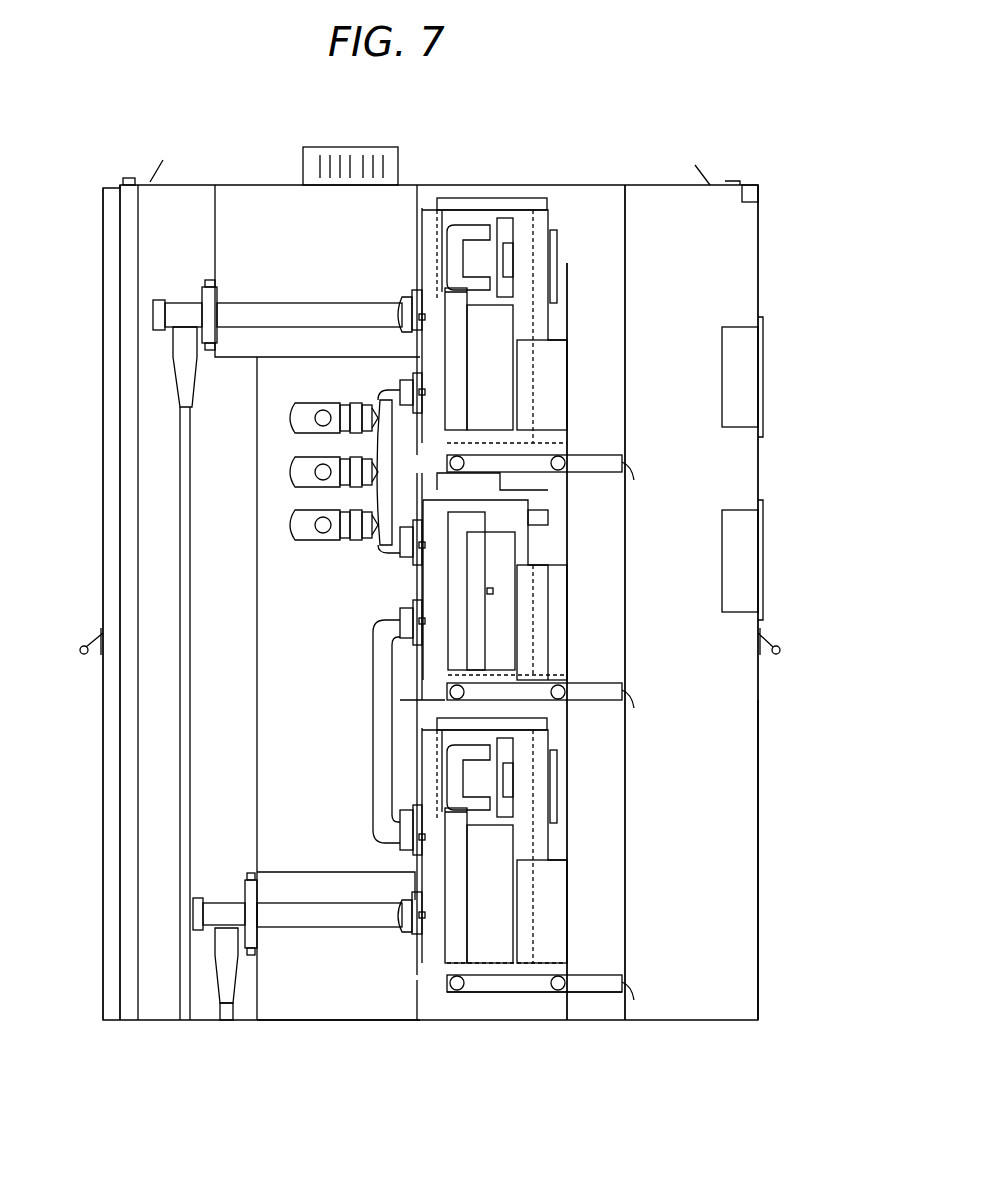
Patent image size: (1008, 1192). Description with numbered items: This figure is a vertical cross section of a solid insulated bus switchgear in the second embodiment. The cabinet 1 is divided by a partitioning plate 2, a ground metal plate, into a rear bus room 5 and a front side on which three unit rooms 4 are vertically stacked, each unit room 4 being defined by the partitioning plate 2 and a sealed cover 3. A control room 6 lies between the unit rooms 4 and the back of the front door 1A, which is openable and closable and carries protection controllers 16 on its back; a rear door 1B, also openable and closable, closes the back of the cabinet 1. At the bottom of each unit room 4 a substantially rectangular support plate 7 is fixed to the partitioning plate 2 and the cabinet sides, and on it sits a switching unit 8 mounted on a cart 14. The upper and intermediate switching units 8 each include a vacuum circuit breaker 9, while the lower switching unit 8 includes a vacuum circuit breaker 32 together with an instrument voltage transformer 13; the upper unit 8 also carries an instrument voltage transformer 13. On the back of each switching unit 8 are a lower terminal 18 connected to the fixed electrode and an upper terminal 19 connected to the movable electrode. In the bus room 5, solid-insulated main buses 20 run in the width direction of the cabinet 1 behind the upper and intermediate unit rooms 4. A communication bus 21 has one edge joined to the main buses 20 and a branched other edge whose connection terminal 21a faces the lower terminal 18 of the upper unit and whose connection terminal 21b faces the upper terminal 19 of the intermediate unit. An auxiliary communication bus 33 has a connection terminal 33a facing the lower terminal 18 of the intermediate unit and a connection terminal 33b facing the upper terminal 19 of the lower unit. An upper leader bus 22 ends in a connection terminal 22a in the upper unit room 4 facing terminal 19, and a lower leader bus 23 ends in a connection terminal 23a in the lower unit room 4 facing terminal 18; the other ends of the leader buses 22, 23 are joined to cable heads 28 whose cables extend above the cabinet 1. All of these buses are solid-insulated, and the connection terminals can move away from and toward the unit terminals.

The cabinet 1 is at (752, 183).
The front door 1A is at (760, 470).
The rear door 1B is at (110, 433).
The partitioning plate 2 is at (412, 1005).
The sealed cover 3 is at (627, 437).
The unit room 4 is at (608, 395).
The bus room 5 is at (282, 1030).
The control room 6 is at (760, 925).
The support plate 7 is at (620, 462).
The switching unit 8 is at (583, 210).
The vacuum circuit breaker 9 is at (538, 330).
The instrument voltage transformer 13 is at (470, 228).
The cart 14 is at (500, 975).
The protection controller 16 is at (763, 385).
The terminal 18 is at (467, 390).
The terminal 19 is at (467, 320).
The main bus 20 is at (307, 530).
The communication bus 21 is at (378, 540).
The connection terminal 21a is at (400, 390).
The connection terminal 21b is at (405, 560).
The upper leader bus 22 is at (268, 305).
The connection terminal 22a is at (407, 320).
The lower leader bus 23 is at (305, 905).
The connection terminal 23a is at (403, 912).
The cable head 28 is at (190, 310).
The vacuum circuit breaker 32 is at (535, 840).
The auxiliary communication bus 33 is at (373, 770).
The connection terminal 33a is at (400, 620).
The connection terminal 33b is at (405, 845).